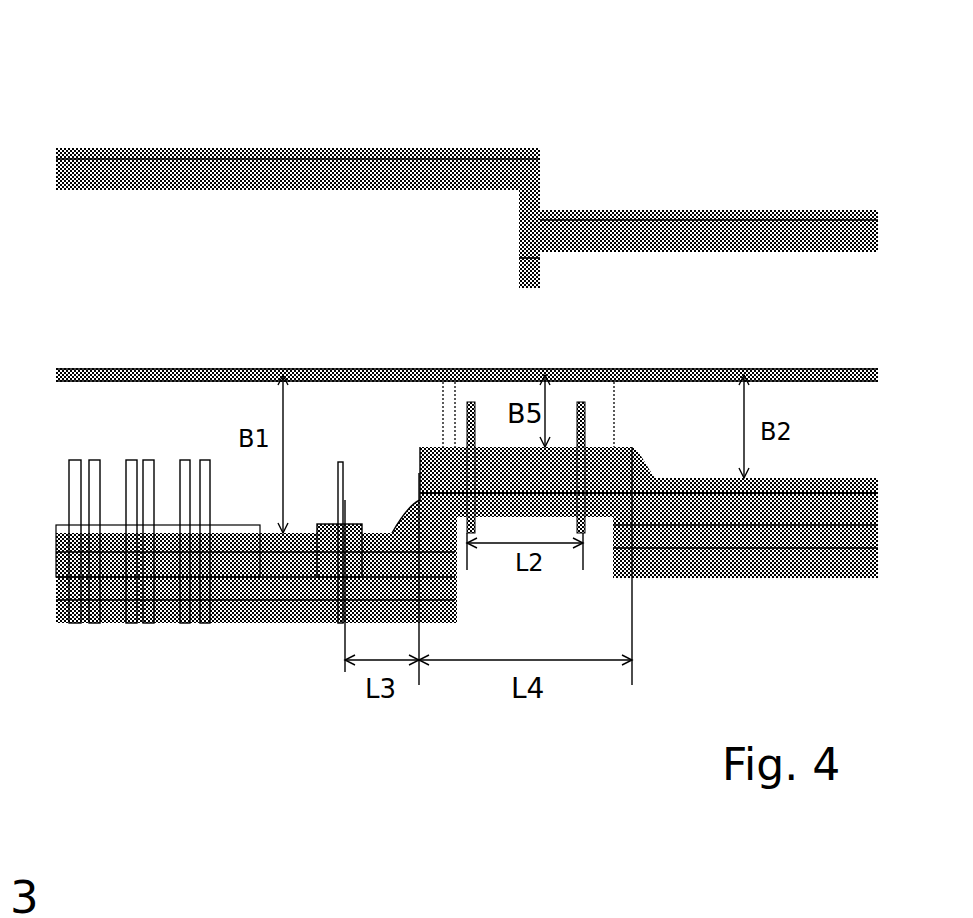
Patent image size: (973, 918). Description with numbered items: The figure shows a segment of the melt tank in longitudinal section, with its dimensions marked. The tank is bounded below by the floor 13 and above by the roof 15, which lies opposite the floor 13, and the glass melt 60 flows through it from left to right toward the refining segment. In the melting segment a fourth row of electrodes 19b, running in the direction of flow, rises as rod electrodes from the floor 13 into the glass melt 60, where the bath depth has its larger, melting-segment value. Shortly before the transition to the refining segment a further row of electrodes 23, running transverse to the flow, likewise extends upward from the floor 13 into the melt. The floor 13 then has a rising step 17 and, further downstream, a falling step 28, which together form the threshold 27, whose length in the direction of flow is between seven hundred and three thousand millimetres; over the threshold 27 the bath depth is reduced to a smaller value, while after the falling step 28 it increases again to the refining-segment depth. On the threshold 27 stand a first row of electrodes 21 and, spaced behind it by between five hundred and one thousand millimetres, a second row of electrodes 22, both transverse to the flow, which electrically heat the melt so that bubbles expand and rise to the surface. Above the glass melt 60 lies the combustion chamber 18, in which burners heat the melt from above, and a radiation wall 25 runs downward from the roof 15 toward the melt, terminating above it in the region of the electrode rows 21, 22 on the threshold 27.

The floor 13 is at (237, 533).
The roof 15 is at (287, 165).
The rising step 17 is at (398, 518).
The combustion chamber 18 is at (205, 232).
The fourth row of electrodes 19b is at (130, 467).
The first row of electrodes 21 is at (470, 413).
The second row of electrodes 22 is at (583, 430).
The further row of electrodes 23 is at (338, 478).
The radiation wall 25 is at (535, 198).
The threshold 27 is at (493, 447).
The falling step 28 is at (643, 463).
The glass melt 60 is at (858, 373).